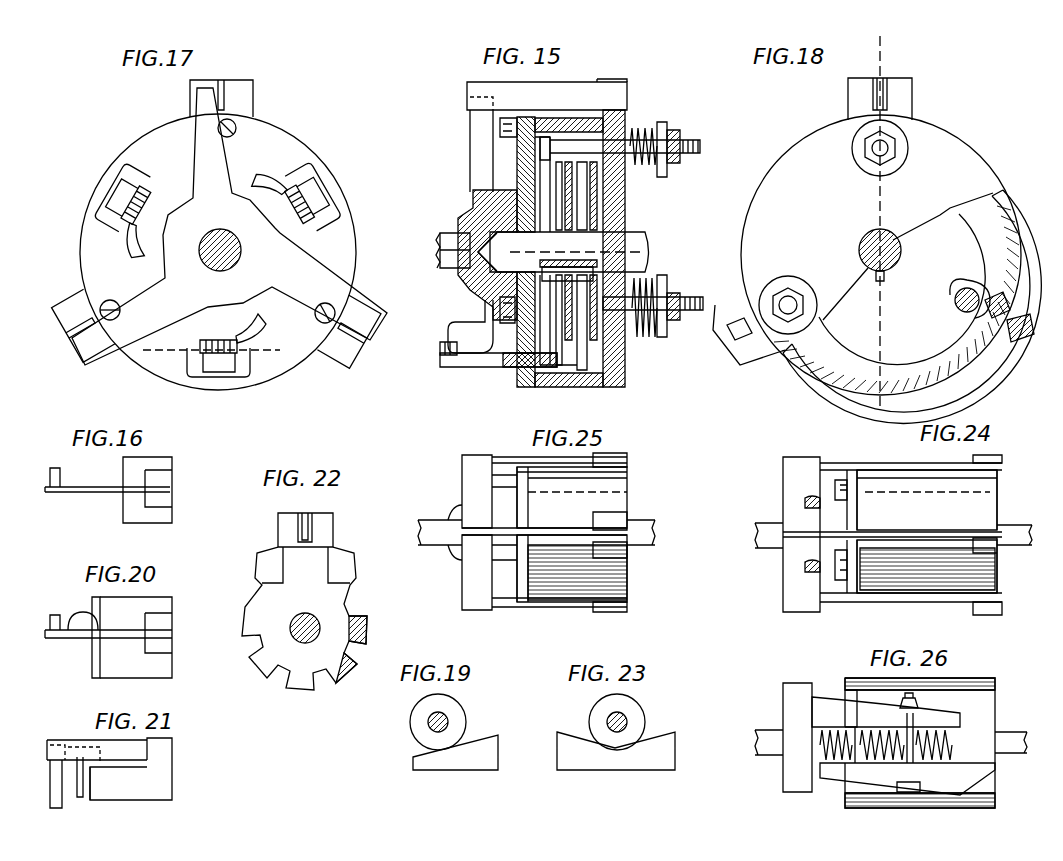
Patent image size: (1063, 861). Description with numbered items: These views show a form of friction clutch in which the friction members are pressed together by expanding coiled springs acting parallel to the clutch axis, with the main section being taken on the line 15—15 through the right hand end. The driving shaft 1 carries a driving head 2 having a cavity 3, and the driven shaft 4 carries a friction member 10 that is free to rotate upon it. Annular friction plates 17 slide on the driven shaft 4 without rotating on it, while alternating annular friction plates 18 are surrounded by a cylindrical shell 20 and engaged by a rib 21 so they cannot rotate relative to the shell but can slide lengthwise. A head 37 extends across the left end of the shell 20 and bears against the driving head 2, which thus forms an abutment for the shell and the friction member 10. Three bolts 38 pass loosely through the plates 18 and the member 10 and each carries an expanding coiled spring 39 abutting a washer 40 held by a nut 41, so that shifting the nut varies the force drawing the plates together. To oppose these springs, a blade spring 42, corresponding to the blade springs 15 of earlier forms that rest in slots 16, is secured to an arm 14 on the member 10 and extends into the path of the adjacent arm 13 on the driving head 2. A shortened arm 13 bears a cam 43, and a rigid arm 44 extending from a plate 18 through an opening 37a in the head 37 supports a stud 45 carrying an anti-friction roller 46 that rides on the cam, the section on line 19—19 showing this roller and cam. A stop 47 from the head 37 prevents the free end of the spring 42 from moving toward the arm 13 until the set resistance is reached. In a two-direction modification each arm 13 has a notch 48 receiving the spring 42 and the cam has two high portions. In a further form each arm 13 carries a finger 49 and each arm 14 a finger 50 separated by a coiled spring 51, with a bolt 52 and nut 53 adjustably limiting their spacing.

In FIG. 17, the driving shaft 1 is at (241, 253).
In FIG. 15, the driving shaft 1 is at (435, 240).
In FIG. 22, the driving shaft 1 is at (320, 628).
In FIG. 25, the driving shaft 1 is at (433, 527).
In FIG. 24, the driving shaft 1 is at (770, 527).
In FIG. 26, the driving shaft 1 is at (763, 742).
In FIG. 17, the driving head 2 is at (229, 226).
In FIG. 15, the driving head 2 is at (475, 208).
In FIG. 22, the driving head 2 is at (304, 618).
In FIG. 25, the driving head 2 is at (455, 553).
In FIG. 24, the driving head 2 is at (793, 503).
In FIG. 26, the driving head 2 is at (797, 743).
In FIG. 15, the cavity 3 is at (480, 262).
In FIG. 15, the driven shaft 4 is at (637, 252).
In FIG. 18, the driven shaft 4 is at (887, 240).
In FIG. 25, the driven shaft 4 is at (633, 533).
In FIG. 24, the driven shaft 4 is at (1013, 528).
In FIG. 26, the driven shaft 4 is at (1000, 740).
In FIG. 15, the friction member 10 is at (615, 213).
In FIG. 18, the friction member 10 is at (881, 255).
In FIG. 25, the friction member 10 is at (615, 560).
In FIG. 24, the friction member 10 is at (997, 510).
In FIG. 26, the friction member 10 is at (997, 722).
In FIG. 17, the arm 13 is at (277, 198).
In FIG. 15, the arm 13 is at (478, 136).
In FIG. 16, the arm 13 is at (52, 474).
In FIG. 20, the arm 13 is at (52, 621).
In FIG. 21, the arm 13 is at (52, 778).
In FIG. 22, the arm 13 is at (306, 565).
In FIG. 25, the arm 13 is at (472, 467).
In FIG. 24, the arm 13 is at (808, 473).
In FIG. 26, the arm 13 is at (793, 708).
In FIG. 17, the arm 14 is at (245, 93).
In FIG. 15, the arm 14 is at (600, 80).
In FIG. 18, the arm 14 is at (902, 90).
In FIG. 16, the arm 14 is at (160, 478).
In FIG. 20, the arm 14 is at (160, 655).
In FIG. 21, the arm 14 is at (160, 758).
In FIG. 22, the arm 14 is at (330, 520).
In FIG. 25, the arm 14 is at (618, 460).
In FIG. 24, the arm 14 is at (982, 460).
In FIG. 26, the arm 14 is at (983, 770).
In FIG. 18, the blade spring 15 is at (888, 220).
In FIG. 16, the slot 16 is at (172, 492).
In FIG. 20, the slot 16 is at (160, 623).
In FIG. 25, the slot 16 is at (598, 527).
In FIG. 15, the annular friction plate 17 is at (594, 330).
In FIG. 18, the annular friction plate 17 is at (908, 257).
In FIG. 15, the annular friction plate 18 is at (582, 375).
In FIG. 18, the annular friction plate 18 is at (902, 289).
In FIG. 17, the section line 19 is at (219, 350).
In FIG. 15, the section line 19 is at (582, 275).
In FIG. 18, the section line 19 is at (881, 282).
In FIG. 15, the cylindrical shell 20 is at (548, 386).
In FIG. 18, the cylindrical shell 20 is at (967, 363).
In FIG. 21, the cylindrical shell 20 is at (129, 781).
In FIG. 25, the cylindrical shell 20 is at (572, 534).
In FIG. 24, the cylindrical shell 20 is at (927, 531).
In FIG. 26, the cylindrical shell 20 is at (930, 815).
In FIG. 15, the rib 21 is at (578, 131).
In FIG. 18, the rib 21 is at (1000, 308).
In FIG. 17, the head 37 is at (218, 252).
In FIG. 15, the head 37 is at (515, 158).
In FIG. 20, the head 37 is at (96, 650).
In FIG. 21, the head 37 is at (112, 795).
In FIG. 25, the head 37 is at (504, 534).
In FIG. 24, the head 37 is at (850, 480).
In FIG. 26, the head 37 is at (848, 697).
In FIG. 17, the opening 37a is at (360, 221).
In FIG. 15, the opening 37a is at (517, 378).
In FIG. 15, the bolt 38 is at (702, 146).
In FIG. 18, the bolt 38 is at (888, 145).
In FIG. 15, the expanding coiled spring 39 is at (648, 173).
In FIG. 15, the washer 40 is at (667, 170).
In FIG. 18, the washer 40 is at (903, 163).
In FIG. 15, the nut 41 is at (677, 131).
In FIG. 18, the nut 41 is at (867, 143).
In FIG. 17, the blade spring 42 is at (222, 82).
In FIG. 15, the blade spring 42 is at (547, 96).
In FIG. 18, the blade spring 42 is at (882, 80).
In FIG. 16, the blade spring 42 is at (95, 492).
In FIG. 20, the blade spring 42 is at (108, 634).
In FIG. 21, the blade spring 42 is at (115, 747).
In FIG. 22, the blade spring 42 is at (303, 517).
In FIG. 25, the blade spring 42 is at (510, 463).
In FIG. 24, the blade spring 42 is at (890, 452).
In FIG. 17, the cam 43 is at (127, 238).
In FIG. 15, the cam 43 is at (465, 332).
In FIG. 19, the cam 43 is at (485, 755).
In FIG. 23, the cam 43 is at (630, 758).
In FIG. 17, the rigid arm 44 is at (123, 197).
In FIG. 24, the rigid arm 44 is at (832, 470).
In FIG. 19, the stud 45 is at (430, 724).
In FIG. 23, the stud 45 is at (610, 720).
In FIG. 17, the anti-friction roller 46 is at (143, 197).
In FIG. 15, the anti-friction roller 46 is at (440, 347).
In FIG. 19, the anti-friction roller 46 is at (455, 720).
In FIG. 23, the anti-friction roller 46 is at (633, 716).
In FIG. 20, the stop 47 is at (78, 610).
In FIG. 21, the stop 47 is at (80, 780).
In FIG. 22, the notch 48 is at (330, 537).
In FIG. 26, the finger 49 is at (886, 712).
In FIG. 26, the finger 50 is at (907, 778).
In FIG. 26, the coiled spring 51 is at (873, 745).
In FIG. 26, the bolt 52 is at (905, 757).
In FIG. 26, the nut 53 is at (917, 707).